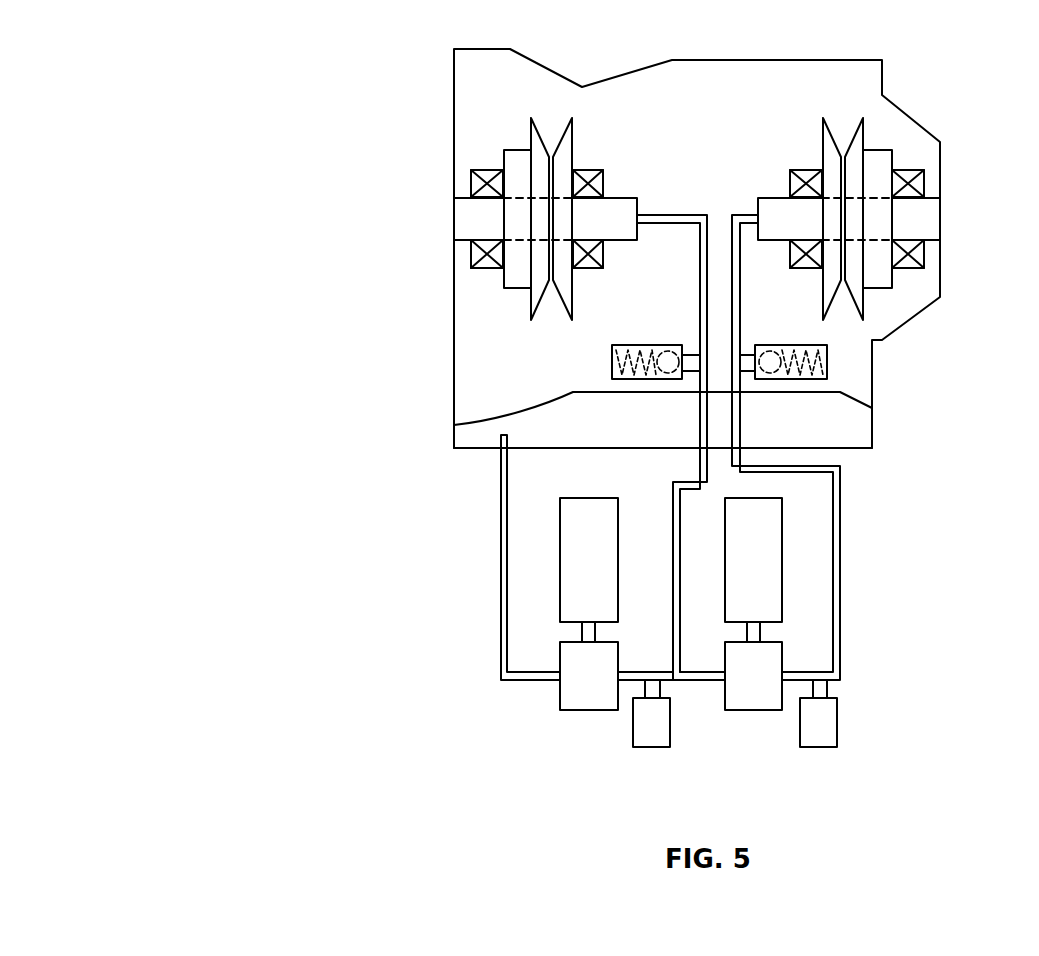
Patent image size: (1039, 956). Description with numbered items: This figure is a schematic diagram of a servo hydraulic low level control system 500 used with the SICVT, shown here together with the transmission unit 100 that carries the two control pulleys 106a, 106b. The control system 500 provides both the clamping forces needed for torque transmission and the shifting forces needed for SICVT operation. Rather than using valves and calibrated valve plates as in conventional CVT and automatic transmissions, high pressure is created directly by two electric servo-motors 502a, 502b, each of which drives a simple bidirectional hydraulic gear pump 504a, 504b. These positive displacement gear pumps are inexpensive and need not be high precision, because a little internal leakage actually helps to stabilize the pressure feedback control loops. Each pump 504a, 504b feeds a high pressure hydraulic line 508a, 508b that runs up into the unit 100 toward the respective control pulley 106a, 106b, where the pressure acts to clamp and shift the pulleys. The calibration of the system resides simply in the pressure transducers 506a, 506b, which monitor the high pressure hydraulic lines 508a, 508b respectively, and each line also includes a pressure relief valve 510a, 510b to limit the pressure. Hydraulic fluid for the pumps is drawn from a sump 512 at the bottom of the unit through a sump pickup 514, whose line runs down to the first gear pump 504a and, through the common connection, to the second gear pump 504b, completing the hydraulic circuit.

The low level control system 500 is at (299, 66).
The drive assembly 100 is at (488, 49).
The control pulley 106a is at (531, 118).
The control pulley 106b is at (863, 118).
The electric servo-motor 502a is at (560, 600).
The electric servo-motor 502b is at (782, 525).
The bidirectional hydraulic gear pump 504a is at (580, 712).
The bidirectional hydraulic gear pump 504b is at (735, 712).
The pressure transducer 506a is at (645, 748).
The pressure transducer 506b is at (838, 722).
The high pressure hydraulic line 508a is at (700, 297).
The high pressure hydraulic line 508b is at (840, 660).
The pressure relief valve 510a is at (612, 362).
The pressure relief valve 510b is at (827, 357).
The sump 512 is at (472, 437).
The sump pickup 514 is at (501, 545).